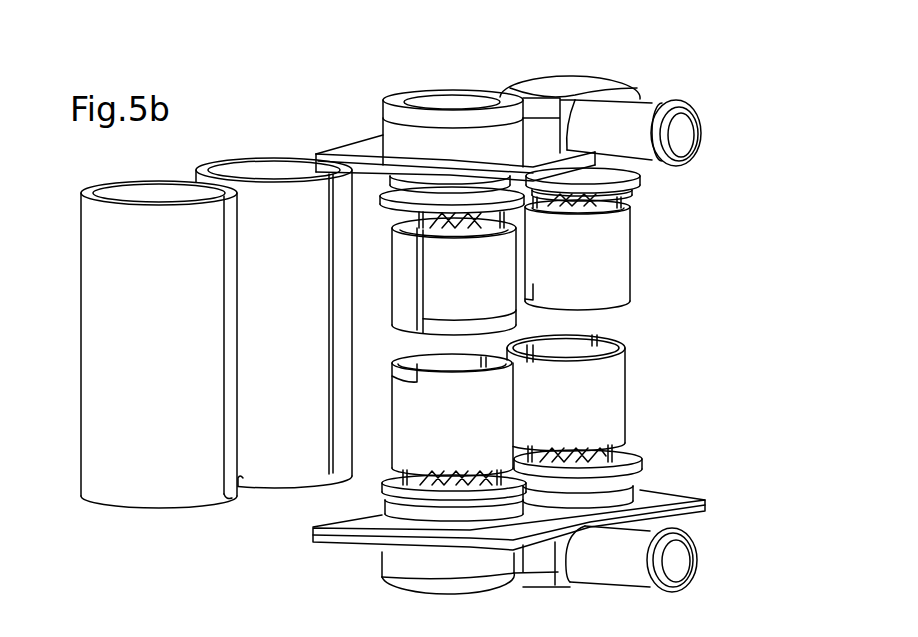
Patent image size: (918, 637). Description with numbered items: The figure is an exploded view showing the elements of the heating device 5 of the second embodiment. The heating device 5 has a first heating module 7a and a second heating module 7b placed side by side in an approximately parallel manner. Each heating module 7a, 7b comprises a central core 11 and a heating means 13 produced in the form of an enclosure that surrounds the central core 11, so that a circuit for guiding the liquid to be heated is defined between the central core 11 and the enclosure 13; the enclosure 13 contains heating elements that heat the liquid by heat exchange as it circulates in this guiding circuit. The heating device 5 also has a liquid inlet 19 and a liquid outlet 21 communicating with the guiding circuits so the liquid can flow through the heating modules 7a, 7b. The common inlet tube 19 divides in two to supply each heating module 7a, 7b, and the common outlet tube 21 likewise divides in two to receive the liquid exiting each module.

The heating device 5 is at (527, 298).
The first heating module 7a is at (385, 93).
The second heating module 7b is at (628, 70).
The central core 11 is at (661, 366).
The heating means 13 is at (146, 495).
The liquid inlet 19 is at (695, 135).
The liquid outlet 21 is at (675, 563).